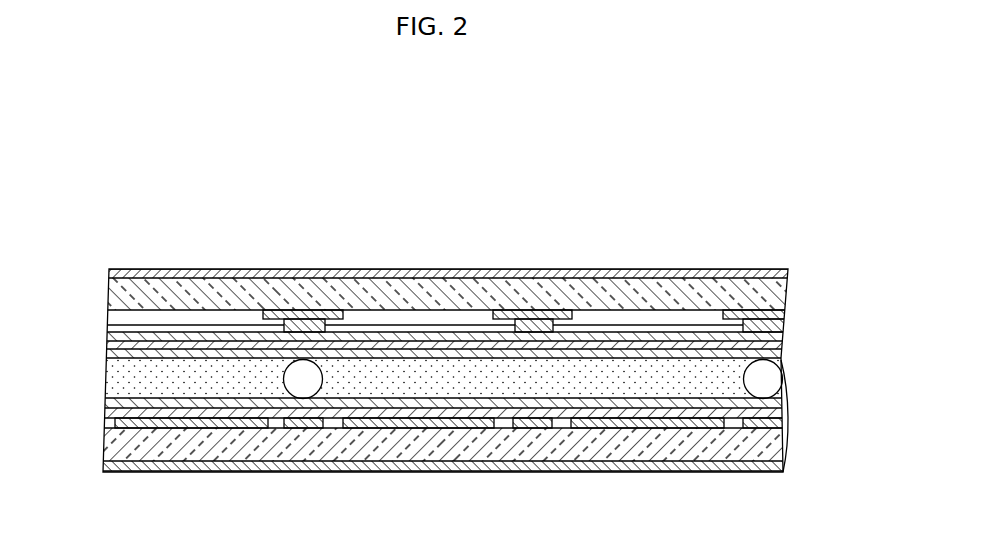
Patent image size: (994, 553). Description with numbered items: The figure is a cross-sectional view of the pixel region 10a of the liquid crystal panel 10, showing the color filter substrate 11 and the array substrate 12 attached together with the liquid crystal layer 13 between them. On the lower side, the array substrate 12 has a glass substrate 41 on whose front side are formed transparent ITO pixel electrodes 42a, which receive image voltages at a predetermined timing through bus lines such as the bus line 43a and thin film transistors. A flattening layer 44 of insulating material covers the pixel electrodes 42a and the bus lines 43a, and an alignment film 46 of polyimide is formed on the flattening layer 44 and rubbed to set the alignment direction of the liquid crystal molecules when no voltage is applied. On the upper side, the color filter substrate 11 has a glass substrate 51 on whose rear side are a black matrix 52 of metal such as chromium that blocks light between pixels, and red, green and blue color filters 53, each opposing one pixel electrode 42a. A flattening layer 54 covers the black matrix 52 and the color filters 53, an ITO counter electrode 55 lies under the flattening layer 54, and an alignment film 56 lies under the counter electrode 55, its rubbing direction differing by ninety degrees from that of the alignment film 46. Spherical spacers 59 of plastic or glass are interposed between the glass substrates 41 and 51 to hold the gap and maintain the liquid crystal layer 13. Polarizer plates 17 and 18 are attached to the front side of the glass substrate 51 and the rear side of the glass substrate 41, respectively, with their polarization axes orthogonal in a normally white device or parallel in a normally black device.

The liquid crystal panel 10 is at (352, 178).
The pixel region 10a is at (576, 245).
The color filter substrate 11 is at (102, 272).
The array substrate 12 is at (102, 397).
The liquid crystal layer 13 is at (116, 378).
The polarizer plate 17 is at (455, 290).
The polarizer plate 18 is at (462, 466).
The glass substrate 41 is at (689, 466).
The pixel electrode 42a is at (172, 428).
The bus line 43a is at (313, 428).
The flattening layer 44 is at (780, 416).
The alignment film 46 is at (780, 406).
The glass substrate 51 is at (693, 275).
The black matrix 52 is at (300, 310).
The color filters 53 is at (171, 317).
The flattening layer 54 is at (777, 330).
The counter electrode 55 is at (777, 345).
The alignment film 56 is at (777, 356).
The spacers 59 is at (295, 387).